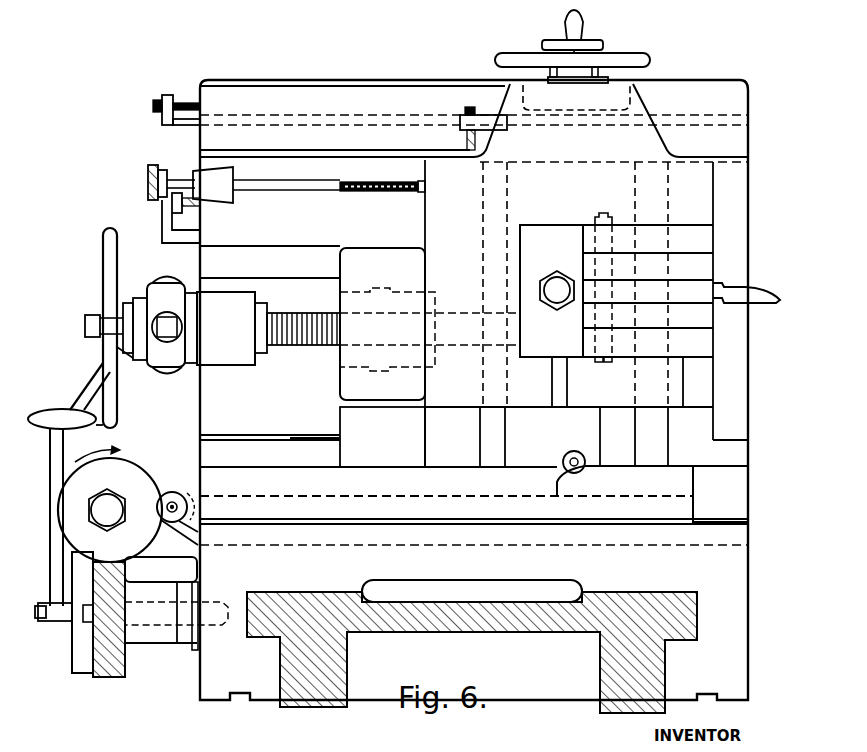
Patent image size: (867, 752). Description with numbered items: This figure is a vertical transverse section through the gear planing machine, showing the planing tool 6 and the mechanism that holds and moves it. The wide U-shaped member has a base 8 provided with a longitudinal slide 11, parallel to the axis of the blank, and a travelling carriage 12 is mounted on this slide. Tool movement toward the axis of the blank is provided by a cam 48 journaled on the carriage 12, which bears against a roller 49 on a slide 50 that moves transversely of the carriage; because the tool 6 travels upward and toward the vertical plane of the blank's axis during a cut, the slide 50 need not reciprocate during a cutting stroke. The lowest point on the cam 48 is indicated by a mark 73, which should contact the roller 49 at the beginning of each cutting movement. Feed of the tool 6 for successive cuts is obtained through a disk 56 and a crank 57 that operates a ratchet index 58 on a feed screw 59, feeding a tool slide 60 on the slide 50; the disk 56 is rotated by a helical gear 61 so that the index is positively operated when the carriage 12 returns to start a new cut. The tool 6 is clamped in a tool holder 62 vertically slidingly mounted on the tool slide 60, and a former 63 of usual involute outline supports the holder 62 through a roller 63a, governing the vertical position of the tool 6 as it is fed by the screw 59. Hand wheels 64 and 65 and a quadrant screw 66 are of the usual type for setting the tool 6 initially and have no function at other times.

The planing tool 6 is at (760, 290).
The base 8 is at (348, 650).
The longitudinal slide 11 is at (316, 590).
The carriage 12 is at (202, 663).
The cam 48 is at (70, 532).
The roller 49 is at (174, 490).
The slide 50 is at (200, 395).
The disk 56 is at (70, 635).
The crank 57 is at (49, 477).
The ratchet index 58 is at (240, 365).
The feed screw 59 is at (292, 348).
The tool slide 60 is at (425, 213).
The helical gear 61 is at (107, 677).
The tool holder 62 is at (568, 226).
The former 63 is at (693, 484).
The roller 63a is at (575, 451).
The hand wheel 64 is at (103, 272).
The hand wheel 65 is at (626, 60).
The quadrant screw 66 is at (606, 214).
The mark 73 is at (139, 507).